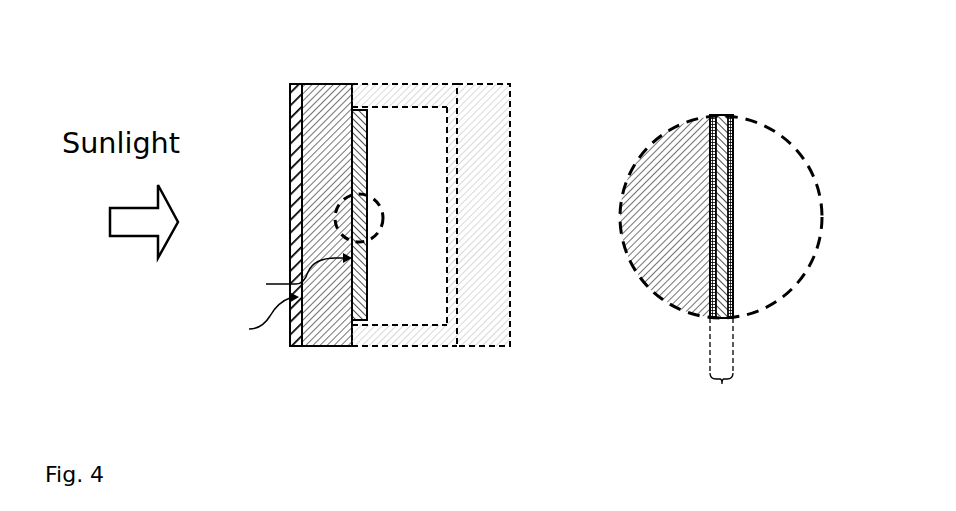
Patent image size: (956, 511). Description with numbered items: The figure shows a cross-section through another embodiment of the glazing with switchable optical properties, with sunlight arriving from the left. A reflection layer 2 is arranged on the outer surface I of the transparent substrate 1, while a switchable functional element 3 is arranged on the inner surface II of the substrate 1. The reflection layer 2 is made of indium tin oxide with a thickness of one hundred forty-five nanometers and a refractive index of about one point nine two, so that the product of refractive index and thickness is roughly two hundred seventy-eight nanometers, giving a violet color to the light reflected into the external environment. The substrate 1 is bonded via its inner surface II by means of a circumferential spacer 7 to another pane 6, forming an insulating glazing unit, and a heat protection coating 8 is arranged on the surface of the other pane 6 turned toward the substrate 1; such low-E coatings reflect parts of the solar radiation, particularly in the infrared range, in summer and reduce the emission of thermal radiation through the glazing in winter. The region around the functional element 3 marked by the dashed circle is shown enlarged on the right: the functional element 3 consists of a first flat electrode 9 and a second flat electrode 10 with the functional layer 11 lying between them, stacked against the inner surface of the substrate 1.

The transparent substrate 1 is at (326, 346).
The reflection layer 2 is at (290, 85).
The switchable functional element 3 is at (360, 320).
The other pane 6 is at (480, 330).
The spacer 7 is at (440, 96).
The heat protection coating 8 is at (450, 277).
The first flat electrode of the functional element 9 is at (733, 120).
The second flat electrode of the functional element 10 is at (711, 119).
The functional layer of the functional element 11 is at (722, 115).
The outer surface of the transparent substrate I is at (259, 318).
The inner surface of the transparent substrate II is at (291, 273).